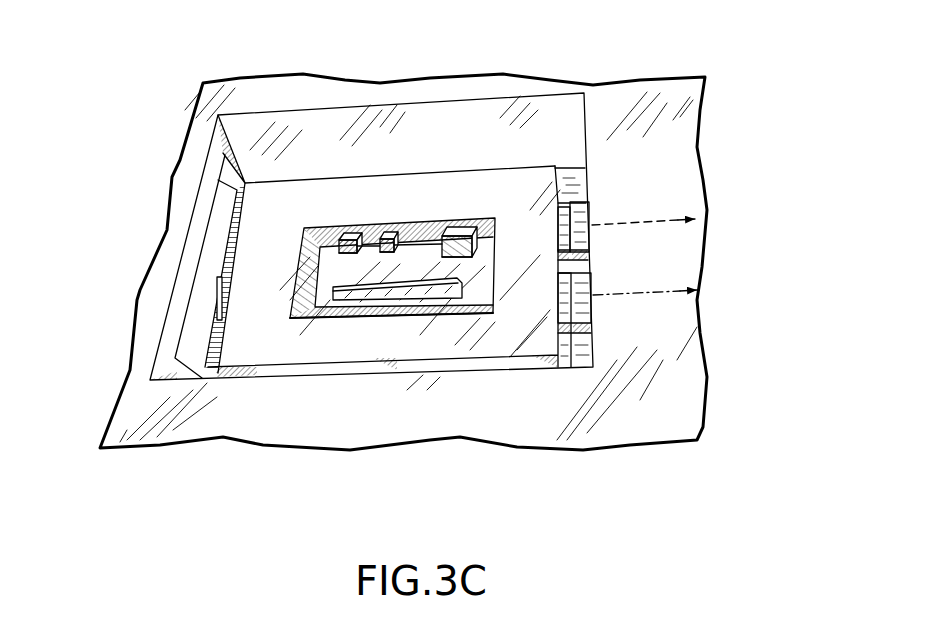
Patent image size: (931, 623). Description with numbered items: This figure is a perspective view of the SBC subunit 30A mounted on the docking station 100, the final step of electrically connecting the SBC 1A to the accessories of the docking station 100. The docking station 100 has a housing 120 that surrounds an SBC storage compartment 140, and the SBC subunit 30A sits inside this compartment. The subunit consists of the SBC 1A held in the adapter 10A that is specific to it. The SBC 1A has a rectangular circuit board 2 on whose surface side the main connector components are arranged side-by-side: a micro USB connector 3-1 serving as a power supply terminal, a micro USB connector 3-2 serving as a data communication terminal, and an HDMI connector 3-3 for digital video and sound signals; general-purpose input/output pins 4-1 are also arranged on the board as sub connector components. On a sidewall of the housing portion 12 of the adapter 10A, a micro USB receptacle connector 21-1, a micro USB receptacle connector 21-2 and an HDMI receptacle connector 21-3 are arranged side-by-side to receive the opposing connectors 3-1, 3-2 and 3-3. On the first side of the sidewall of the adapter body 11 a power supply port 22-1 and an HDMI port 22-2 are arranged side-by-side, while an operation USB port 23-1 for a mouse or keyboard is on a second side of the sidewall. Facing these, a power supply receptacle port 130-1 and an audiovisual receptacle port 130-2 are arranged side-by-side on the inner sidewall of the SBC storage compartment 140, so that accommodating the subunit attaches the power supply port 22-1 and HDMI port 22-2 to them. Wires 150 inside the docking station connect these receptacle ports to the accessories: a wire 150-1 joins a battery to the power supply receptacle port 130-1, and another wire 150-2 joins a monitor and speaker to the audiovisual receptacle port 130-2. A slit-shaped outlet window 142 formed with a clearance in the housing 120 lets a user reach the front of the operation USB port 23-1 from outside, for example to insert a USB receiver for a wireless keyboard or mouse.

The housing 120 is at (707, 77).
The docking station 100 is at (700, 117).
The adapter 10A is at (557, 160).
The SBC storage compartment 140 is at (508, 118).
The outlet window 142 is at (203, 232).
The USB port 23-1 is at (213, 303).
The housing portion 12 is at (238, 366).
The circuit board 2 is at (318, 228).
The SBC 1A is at (330, 317).
The micro USB receptacle connector 21-1 is at (348, 237).
The micro USB receptacle connector 21-2 is at (383, 232).
The HDMI receptacle connector 21-3 is at (462, 228).
The micro USB connector 3-1 is at (352, 252).
The micro USB connector 3-2 is at (398, 250).
The HDMI connector 3-3 is at (476, 254).
The general-purpose input/output pins 4-1 is at (373, 293).
The adapter body 11 is at (463, 338).
The SBC subunit 30A is at (577, 182).
The power supply receptacle port 130-1 is at (580, 213).
The power supply port 22-1 is at (563, 232).
The wire 150-1 is at (697, 212).
The audiovisual receptacle port 130-2 is at (583, 279).
The HDMI port 22-2 is at (566, 315).
The wire 150-2 is at (700, 294).
The wires 150 is at (650, 306).